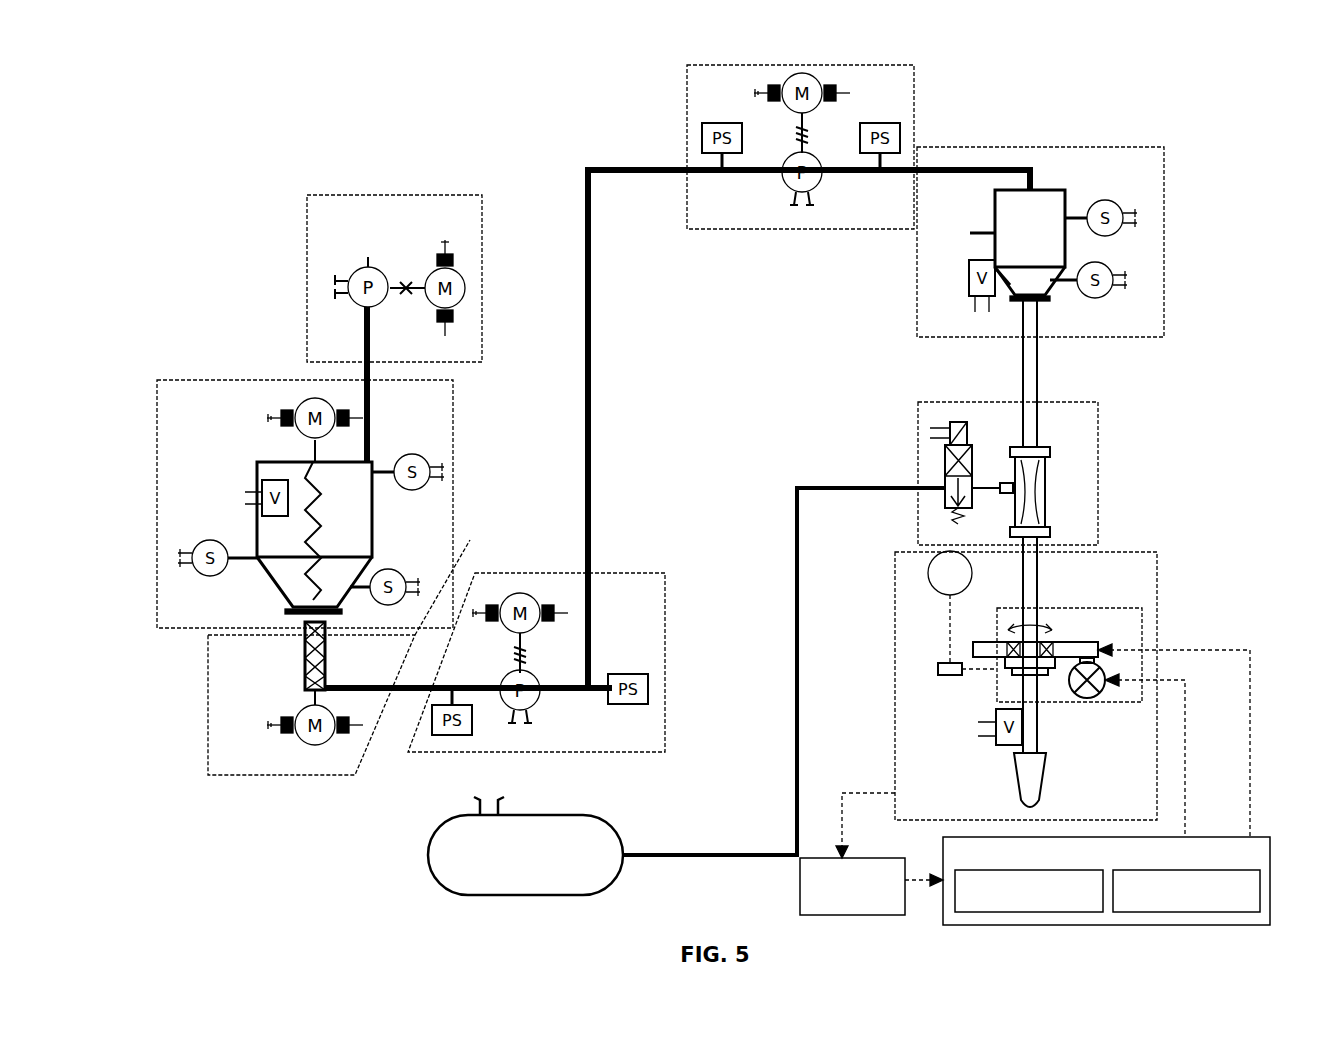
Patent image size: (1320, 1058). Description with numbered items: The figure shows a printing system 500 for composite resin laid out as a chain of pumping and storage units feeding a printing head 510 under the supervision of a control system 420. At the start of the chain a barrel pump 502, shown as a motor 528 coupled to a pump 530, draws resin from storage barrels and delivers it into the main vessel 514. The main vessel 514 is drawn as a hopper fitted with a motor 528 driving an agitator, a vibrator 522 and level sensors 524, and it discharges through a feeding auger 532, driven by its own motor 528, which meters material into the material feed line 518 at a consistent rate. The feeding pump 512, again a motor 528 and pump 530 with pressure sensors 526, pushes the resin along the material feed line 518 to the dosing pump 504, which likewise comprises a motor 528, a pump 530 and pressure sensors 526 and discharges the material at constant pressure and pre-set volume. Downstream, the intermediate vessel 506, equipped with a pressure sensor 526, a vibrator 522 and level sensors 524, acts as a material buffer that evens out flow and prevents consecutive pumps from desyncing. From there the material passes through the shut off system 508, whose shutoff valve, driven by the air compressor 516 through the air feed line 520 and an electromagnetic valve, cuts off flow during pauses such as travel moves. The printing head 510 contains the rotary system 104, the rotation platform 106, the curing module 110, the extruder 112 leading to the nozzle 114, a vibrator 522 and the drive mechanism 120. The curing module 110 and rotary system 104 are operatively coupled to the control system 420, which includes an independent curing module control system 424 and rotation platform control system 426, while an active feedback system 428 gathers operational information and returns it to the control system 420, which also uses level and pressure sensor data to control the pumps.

The printing system 500 is at (1216, 110).
The barrel pump 502 is at (385, 195).
The dosing pump 504 is at (740, 229).
The intermediate vessel 506 is at (1165, 245).
The shut off system 508 is at (1098, 475).
The printing head 510 is at (895, 745).
The feeding pump 512 is at (650, 573).
The main vessel 514 is at (240, 380).
The air compressor 516 is at (525, 846).
The material feed line 518 is at (585, 372).
The air feed line 520 is at (797, 790).
The vibrator 522 is at (258, 496).
The level sensor 524 is at (195, 575).
The pressure sensor 526 is at (628, 705).
The motor 528 is at (470, 285).
The pump 530 is at (348, 272).
The feeding auger 532 is at (208, 702).
The rotary system 104 is at (1060, 620).
The rotation platform 106 is at (1143, 630).
The curing module 110 is at (1092, 705).
The extruder 112 is at (1040, 735).
The nozzle 114 is at (1015, 778).
The drive mechanism 120 is at (938, 668).
The control system 420 is at (1106, 881).
The curing module control system 424 is at (1186, 891).
The rotation platform control system 426 is at (1029, 891).
The active feedback system 428 is at (871, 854).